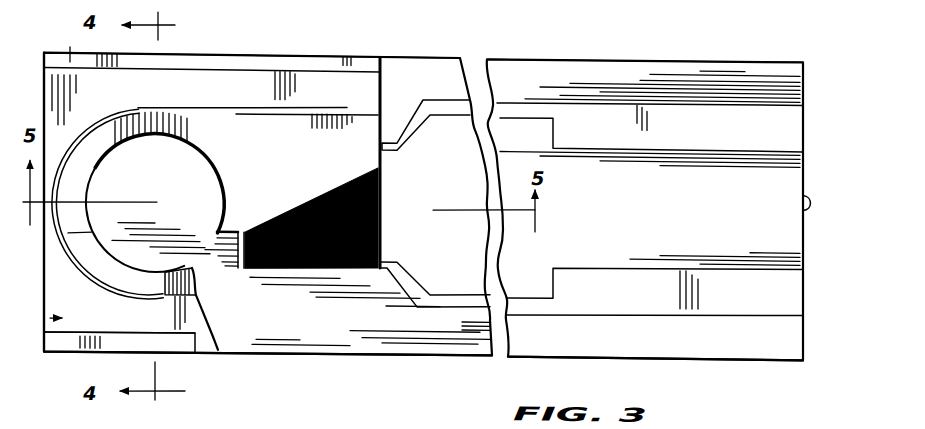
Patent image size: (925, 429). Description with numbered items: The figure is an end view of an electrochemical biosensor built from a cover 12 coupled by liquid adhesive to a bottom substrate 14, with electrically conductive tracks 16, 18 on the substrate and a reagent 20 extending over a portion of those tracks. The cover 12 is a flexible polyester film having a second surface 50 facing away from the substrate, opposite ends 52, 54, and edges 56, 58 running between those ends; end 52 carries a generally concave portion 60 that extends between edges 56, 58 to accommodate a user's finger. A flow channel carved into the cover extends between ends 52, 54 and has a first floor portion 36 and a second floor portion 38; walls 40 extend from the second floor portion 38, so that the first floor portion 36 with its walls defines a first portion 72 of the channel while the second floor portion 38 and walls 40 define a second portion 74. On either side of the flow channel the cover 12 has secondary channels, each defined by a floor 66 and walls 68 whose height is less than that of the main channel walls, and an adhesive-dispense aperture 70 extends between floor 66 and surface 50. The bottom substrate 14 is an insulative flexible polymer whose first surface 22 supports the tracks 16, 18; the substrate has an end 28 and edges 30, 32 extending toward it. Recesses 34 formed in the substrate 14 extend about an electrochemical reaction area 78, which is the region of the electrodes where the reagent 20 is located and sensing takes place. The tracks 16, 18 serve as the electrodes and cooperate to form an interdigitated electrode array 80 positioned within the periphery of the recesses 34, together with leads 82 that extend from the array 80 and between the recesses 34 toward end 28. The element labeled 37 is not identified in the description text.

The cover 12 is at (301, 63).
The bottom substrate 14 is at (448, 51).
The electrically conductive track 16 is at (678, 116).
The electrically conductive track 18 is at (728, 291).
The reagent 20 is at (42, 322).
The first surface 22 is at (162, 192).
The end 28 is at (803, 192).
The edge 30 is at (413, 352).
The edge 32 is at (420, 53).
The recess 34 is at (245, 266).
The first floor portion 36 is at (253, 89).
The corner wall 37 is at (64, 369).
The second floor portion 38 is at (310, 113).
The wall 40 is at (214, 232).
The second surface 50 is at (68, 318).
The end 52 is at (40, 254).
The end 54 is at (387, 85).
The edge 56 is at (124, 345).
The edge 58 is at (205, 57).
The concave portion 60 is at (197, 130).
The floor 66 is at (118, 284).
The wall 68 is at (167, 67).
The adhesive-dispense aperture 70 is at (240, 115).
The first portion 72 is at (174, 268).
The second portion 74 is at (98, 232).
The electrochemical reaction area 78 is at (391, 195).
The interdigitated electrode array 80 is at (290, 264).
The lead 82 is at (515, 96).